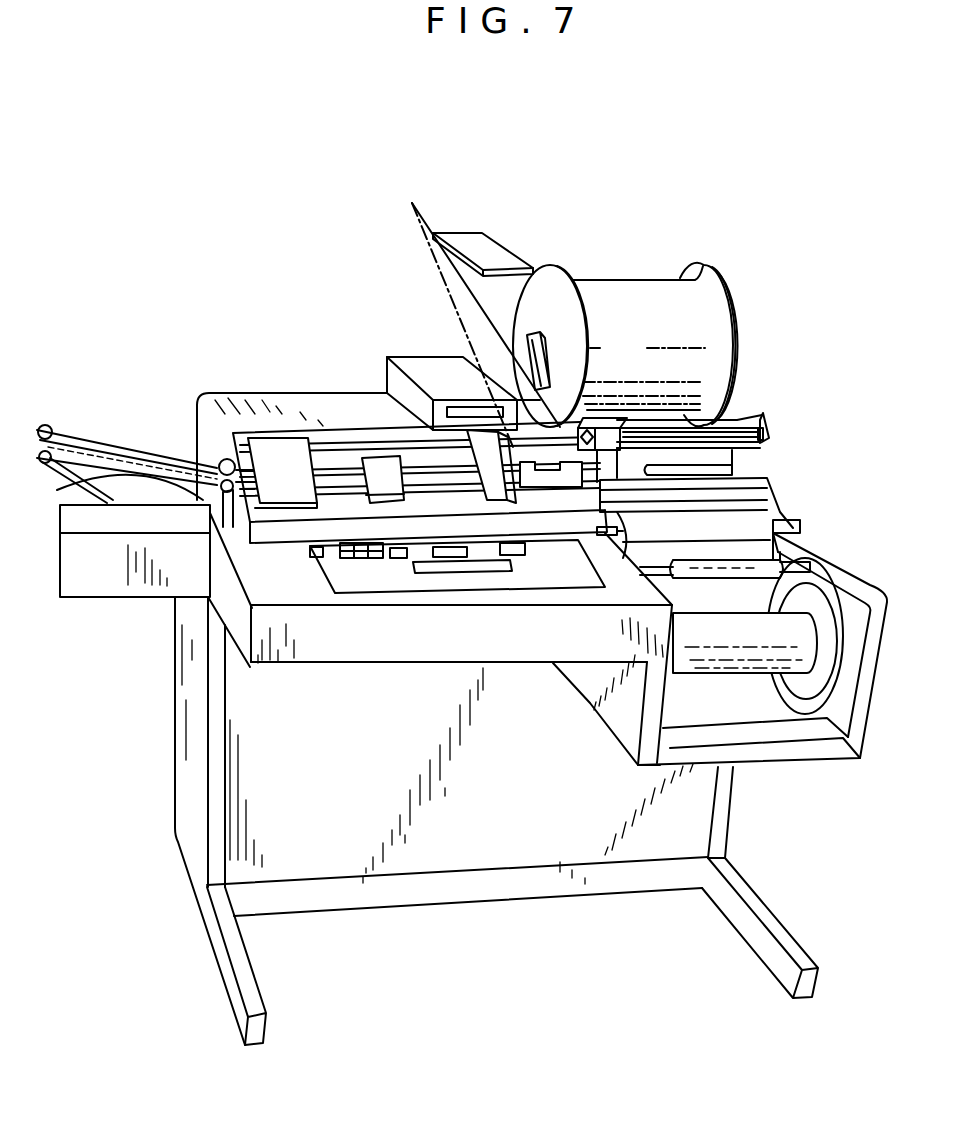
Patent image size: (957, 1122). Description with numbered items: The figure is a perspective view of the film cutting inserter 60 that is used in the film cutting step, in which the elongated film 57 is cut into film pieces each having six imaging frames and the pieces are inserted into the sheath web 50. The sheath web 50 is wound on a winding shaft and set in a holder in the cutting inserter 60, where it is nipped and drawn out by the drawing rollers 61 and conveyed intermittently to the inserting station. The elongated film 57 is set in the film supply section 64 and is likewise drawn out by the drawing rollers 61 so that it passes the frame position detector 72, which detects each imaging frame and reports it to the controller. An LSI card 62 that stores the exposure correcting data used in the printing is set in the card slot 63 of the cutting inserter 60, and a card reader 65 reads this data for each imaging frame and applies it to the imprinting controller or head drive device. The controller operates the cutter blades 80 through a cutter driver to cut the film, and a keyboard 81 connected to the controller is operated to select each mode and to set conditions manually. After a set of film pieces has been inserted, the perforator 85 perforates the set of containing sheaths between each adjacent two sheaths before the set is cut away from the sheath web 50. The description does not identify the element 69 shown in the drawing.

The sheath web 50 is at (619, 280).
The elongated film 57 is at (98, 440).
The film cutting inserter 60 is at (328, 195).
The drawing rollers 61 is at (736, 415).
The LSI card 62 is at (484, 243).
The card slot 63 is at (490, 433).
The film supply section 64 is at (121, 530).
The card reader 65 is at (387, 378).
The guide block 69 is at (610, 418).
The frame position detector 72 is at (283, 450).
The cutter blades 80 is at (503, 486).
The keyboard 81 is at (373, 557).
The perforator 85 is at (762, 484).